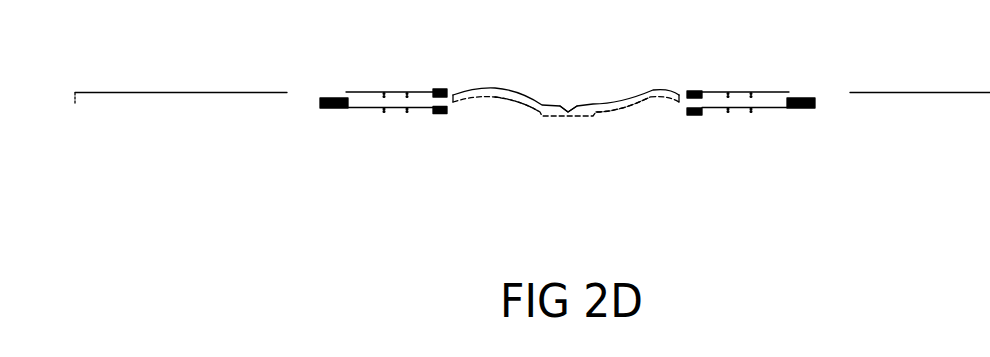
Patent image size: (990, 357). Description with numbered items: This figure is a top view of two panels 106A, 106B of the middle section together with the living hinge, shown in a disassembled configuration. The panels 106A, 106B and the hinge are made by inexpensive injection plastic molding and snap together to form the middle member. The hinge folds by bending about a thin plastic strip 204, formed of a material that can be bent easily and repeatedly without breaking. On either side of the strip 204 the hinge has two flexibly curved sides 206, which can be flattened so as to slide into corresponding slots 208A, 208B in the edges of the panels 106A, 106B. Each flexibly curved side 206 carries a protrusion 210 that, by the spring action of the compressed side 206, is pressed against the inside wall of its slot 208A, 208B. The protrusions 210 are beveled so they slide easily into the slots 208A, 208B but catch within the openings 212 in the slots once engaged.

The panel 106A is at (249, 104).
The panel 106B is at (890, 104).
The slot 208A is at (383, 110).
The slot 208B is at (751, 107).
The protrusion 210 is at (501, 83).
The thin plastic strip 204 is at (568, 84).
The flexibly curved side 206 is at (493, 125).
The opening 212 is at (395, 115).